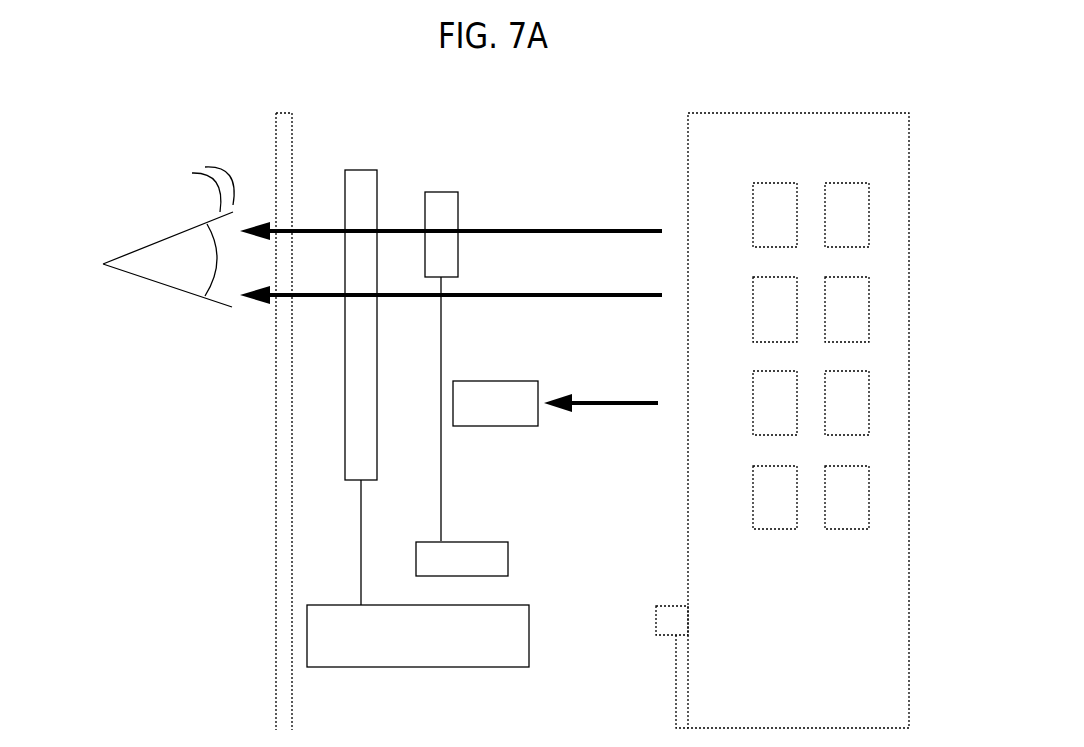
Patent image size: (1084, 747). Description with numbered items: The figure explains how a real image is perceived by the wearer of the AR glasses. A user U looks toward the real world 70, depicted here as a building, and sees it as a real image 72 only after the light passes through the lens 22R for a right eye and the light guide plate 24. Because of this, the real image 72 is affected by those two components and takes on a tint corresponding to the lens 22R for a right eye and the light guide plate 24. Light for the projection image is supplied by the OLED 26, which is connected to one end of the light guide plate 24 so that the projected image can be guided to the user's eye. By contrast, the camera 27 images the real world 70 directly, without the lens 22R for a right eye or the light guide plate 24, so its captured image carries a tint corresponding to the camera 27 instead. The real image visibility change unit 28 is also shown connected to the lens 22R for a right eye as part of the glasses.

The user U is at (162, 216).
The real image 72 is at (290, 112).
The lens for a right eye 22R is at (363, 168).
The light guide plate 24 is at (441, 190).
The camera 27 is at (512, 380).
The OLED 26 is at (474, 541).
The real image visibility change unit 28 is at (334, 604).
The real world 70 is at (853, 100).